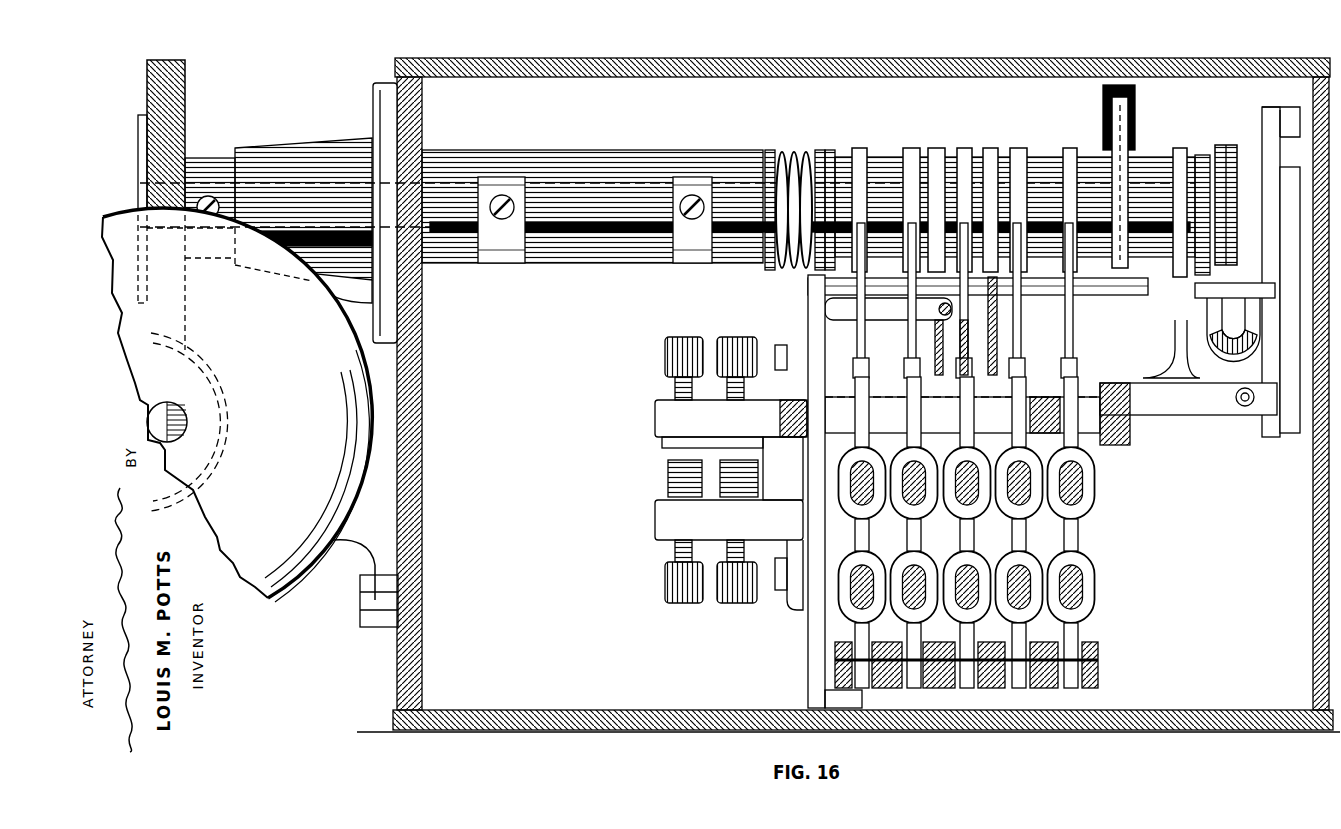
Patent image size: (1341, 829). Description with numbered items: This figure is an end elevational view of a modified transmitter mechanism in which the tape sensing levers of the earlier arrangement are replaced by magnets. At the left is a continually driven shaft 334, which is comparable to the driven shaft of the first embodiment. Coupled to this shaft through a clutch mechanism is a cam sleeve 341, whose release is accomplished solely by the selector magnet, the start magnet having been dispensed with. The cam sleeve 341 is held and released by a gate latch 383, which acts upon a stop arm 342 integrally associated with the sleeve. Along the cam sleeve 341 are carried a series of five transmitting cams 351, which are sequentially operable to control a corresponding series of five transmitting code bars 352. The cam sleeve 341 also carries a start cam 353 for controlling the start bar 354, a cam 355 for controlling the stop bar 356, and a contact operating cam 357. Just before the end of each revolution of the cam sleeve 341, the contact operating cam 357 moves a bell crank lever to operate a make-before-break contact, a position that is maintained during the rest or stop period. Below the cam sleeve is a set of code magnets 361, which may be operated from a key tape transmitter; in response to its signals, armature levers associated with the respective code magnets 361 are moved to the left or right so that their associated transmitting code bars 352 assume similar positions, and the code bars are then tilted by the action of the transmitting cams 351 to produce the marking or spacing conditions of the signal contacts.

The continually driven shaft 334 is at (138, 195).
The cam sleeve 341 is at (878, 178).
The transmitting cams 351 is at (1068, 150).
The contact operating cam 357 is at (1120, 150).
The cam 355 is at (937, 237).
The start cam 353 is at (990, 238).
The stop bar 356 is at (935, 345).
The start bar 354 is at (995, 352).
The stop arm 342 is at (1203, 270).
The transmitting code bars 352 is at (1065, 370).
The gate latch 383 is at (1188, 414).
The code magnets 361 is at (1104, 484).